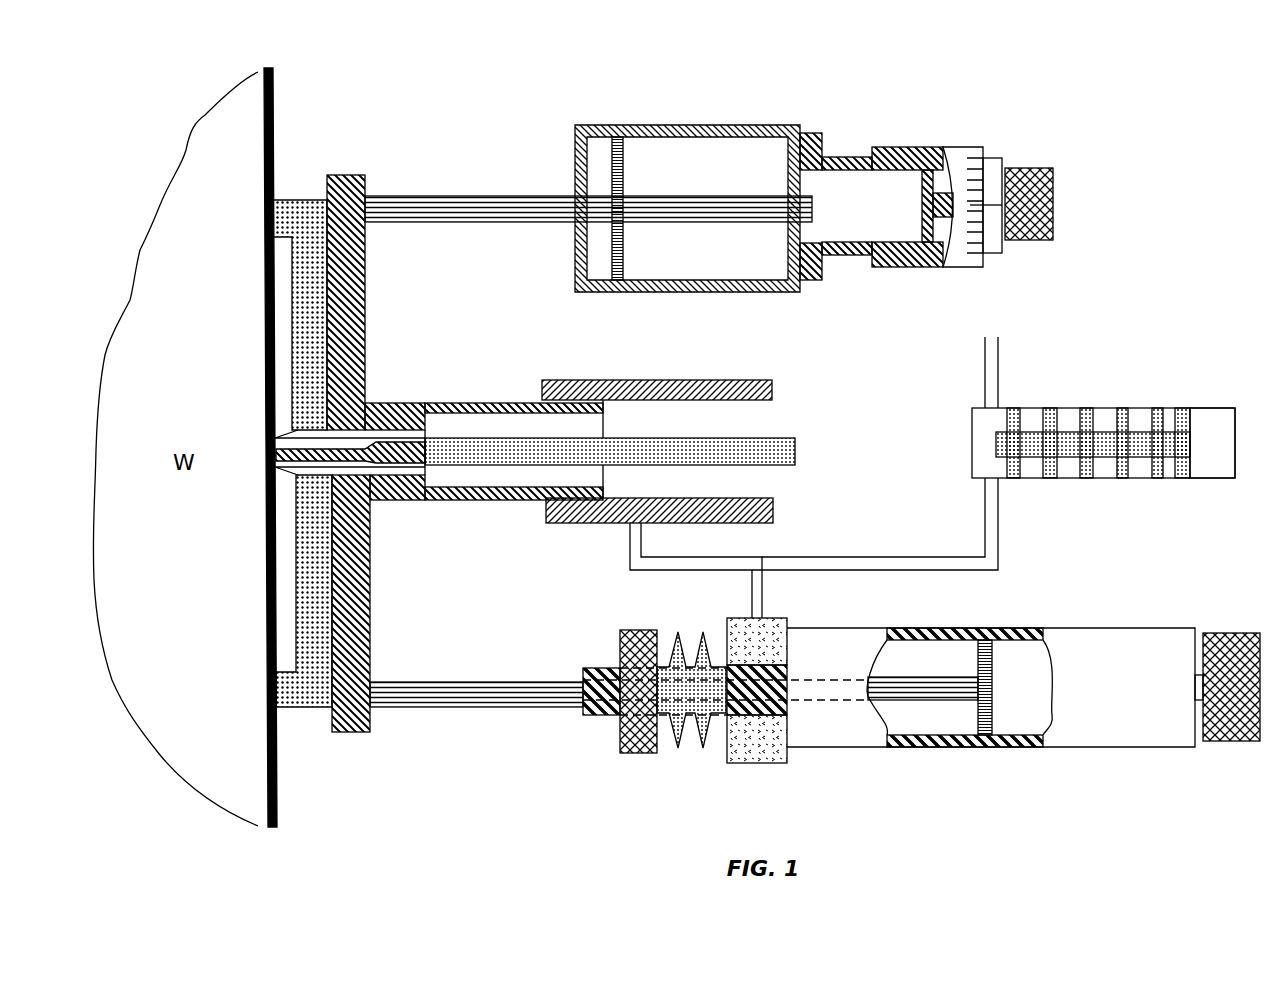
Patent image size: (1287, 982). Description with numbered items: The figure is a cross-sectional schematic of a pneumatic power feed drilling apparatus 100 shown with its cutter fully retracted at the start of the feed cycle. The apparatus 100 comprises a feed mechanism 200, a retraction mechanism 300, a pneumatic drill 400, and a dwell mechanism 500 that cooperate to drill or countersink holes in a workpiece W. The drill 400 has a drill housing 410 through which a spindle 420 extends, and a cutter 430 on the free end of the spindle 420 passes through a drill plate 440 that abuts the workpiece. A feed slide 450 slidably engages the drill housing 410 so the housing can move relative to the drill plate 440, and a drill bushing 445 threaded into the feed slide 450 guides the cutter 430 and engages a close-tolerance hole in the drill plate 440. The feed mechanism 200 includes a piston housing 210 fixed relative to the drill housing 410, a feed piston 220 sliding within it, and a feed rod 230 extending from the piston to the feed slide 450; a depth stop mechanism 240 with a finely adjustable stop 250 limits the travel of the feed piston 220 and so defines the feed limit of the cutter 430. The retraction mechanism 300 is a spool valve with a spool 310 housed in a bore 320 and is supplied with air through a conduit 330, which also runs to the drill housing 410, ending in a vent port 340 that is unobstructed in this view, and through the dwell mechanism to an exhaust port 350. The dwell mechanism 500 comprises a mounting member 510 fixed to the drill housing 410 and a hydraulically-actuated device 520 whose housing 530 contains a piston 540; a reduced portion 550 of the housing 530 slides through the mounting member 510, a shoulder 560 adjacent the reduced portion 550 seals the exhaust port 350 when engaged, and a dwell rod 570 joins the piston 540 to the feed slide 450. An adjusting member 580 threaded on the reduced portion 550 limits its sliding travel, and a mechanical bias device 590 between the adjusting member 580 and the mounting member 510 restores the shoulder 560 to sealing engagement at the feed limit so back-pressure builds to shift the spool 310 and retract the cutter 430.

The drilling apparatus 100 is at (1152, 246).
The feed mechanism 200 is at (709, 163).
The piston housing 210 is at (684, 126).
The feed piston 220 is at (624, 170).
The feed rod 230 is at (480, 205).
The depth stop mechanism 240 is at (926, 150).
The stop 250 is at (922, 205).
The retraction mechanism 300 is at (1103, 421).
The spool 310 is at (1070, 450).
The bore 320 is at (1200, 422).
The conduit 330 is at (990, 381).
The vent port 340 is at (640, 496).
The exhaust port 350 is at (730, 628).
The pneumatic drill 400 is at (562, 451).
The drill housing 410 is at (650, 380).
The spindle 420 is at (770, 450).
The cutter 430 is at (403, 462).
The drill plate 440 is at (303, 205).
The drill bushing 445 is at (385, 405).
The feed slide 450 is at (357, 296).
The dwell mechanism 500 is at (815, 690).
The mounting member 510 is at (775, 762).
The hydraulically-actuated device 520 is at (1080, 750).
The housing 530 is at (977, 630).
The piston 540 is at (996, 718).
The reduced portion 550 is at (592, 716).
The shoulder 560 is at (796, 659).
The dwell rod 570 is at (468, 692).
The adjusting member 580 is at (638, 754).
The mechanical bias device 590 is at (704, 750).